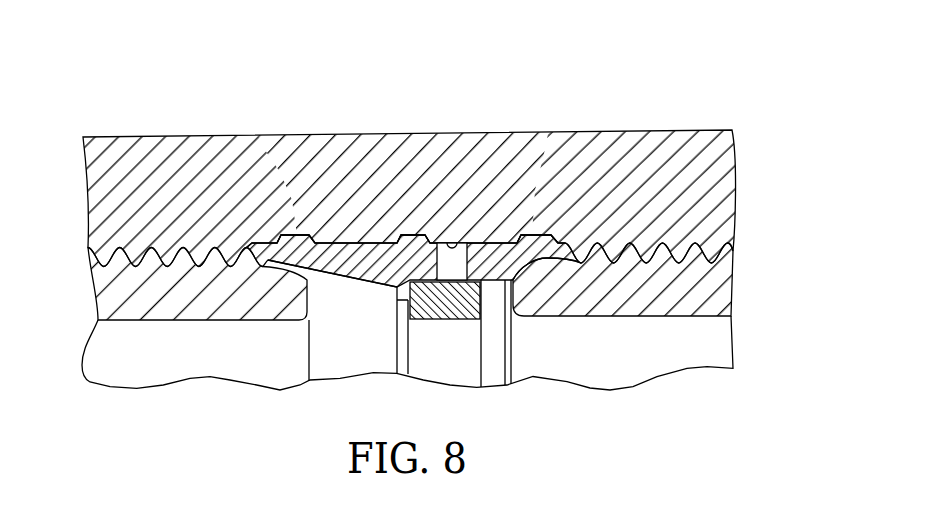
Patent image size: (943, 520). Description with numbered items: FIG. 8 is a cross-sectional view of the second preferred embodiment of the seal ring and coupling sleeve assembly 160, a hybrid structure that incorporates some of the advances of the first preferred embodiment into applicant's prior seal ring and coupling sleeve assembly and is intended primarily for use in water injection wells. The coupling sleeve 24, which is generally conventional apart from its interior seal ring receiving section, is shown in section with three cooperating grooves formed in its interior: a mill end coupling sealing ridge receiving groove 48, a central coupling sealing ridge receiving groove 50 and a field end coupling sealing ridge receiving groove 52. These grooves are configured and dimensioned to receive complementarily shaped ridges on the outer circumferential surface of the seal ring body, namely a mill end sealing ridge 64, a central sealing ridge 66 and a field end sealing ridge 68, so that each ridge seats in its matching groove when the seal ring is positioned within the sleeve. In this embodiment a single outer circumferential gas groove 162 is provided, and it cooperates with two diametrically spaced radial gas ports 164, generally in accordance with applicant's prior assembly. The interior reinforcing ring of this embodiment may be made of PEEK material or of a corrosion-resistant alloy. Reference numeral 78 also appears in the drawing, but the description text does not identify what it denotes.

The coupling sleeve 24 is at (692, 127).
The second preferred embodiment of the seal ring and coupling sleeve assembly 160 is at (623, 102).
The outer circumferential gas groove 162 is at (452, 243).
The radial gas ports 164 is at (453, 263).
The field end coupling sealing ridge receiving groove 52 is at (297, 235).
The central coupling sealing ridge receiving groove 50 is at (411, 235).
The mill end coupling sealing ridge receiving groove 48 is at (532, 235).
The field end sealing ridge 68 is at (228, 321).
The central sealing ridge 66 is at (408, 282).
The mill end sealing ridge 64 is at (540, 258).
The housing 78 is at (548, 0).